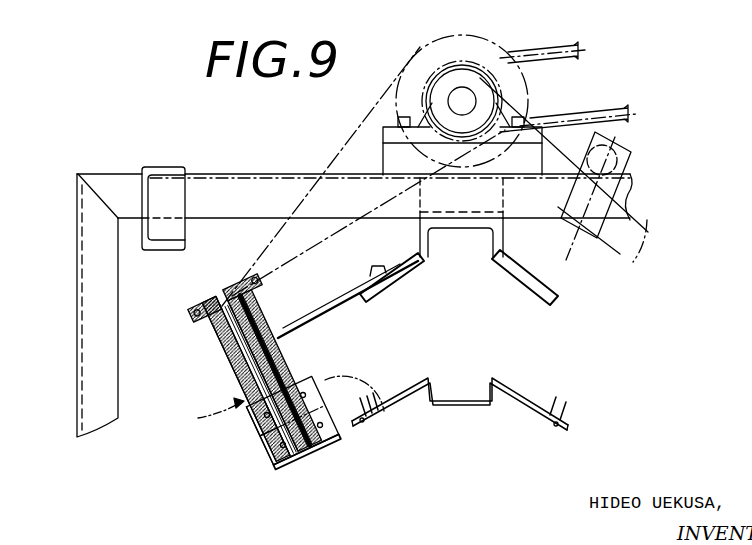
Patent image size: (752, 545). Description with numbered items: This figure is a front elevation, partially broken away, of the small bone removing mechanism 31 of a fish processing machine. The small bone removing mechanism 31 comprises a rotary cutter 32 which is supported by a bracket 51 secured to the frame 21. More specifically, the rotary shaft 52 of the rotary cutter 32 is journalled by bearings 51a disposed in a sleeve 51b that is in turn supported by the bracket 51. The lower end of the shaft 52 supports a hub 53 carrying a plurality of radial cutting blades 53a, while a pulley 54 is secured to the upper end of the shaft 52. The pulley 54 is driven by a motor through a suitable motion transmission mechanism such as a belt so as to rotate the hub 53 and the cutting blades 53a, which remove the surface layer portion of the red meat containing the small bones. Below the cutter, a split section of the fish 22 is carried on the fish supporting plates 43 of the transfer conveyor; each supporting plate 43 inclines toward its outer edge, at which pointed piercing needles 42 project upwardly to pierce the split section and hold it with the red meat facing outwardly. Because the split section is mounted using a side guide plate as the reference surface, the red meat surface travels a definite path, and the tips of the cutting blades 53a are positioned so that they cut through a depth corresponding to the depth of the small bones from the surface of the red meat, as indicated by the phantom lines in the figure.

The frame 21 is at (212, 193).
The fish 22 is at (363, 383).
The small bone removing mechanism 31 is at (211, 414).
The rotary cutter 32 is at (268, 432).
The piercing needles 42 is at (368, 418).
The fish supporting plates 43 is at (412, 396).
The bracket 51 is at (357, 292).
The bearings 51a is at (281, 368).
The sleeve 51b is at (250, 377).
The rotary shaft 52 is at (255, 374).
The hub 53 is at (292, 420).
The cutting blades 53a is at (306, 451).
The pulley 54 is at (225, 298).